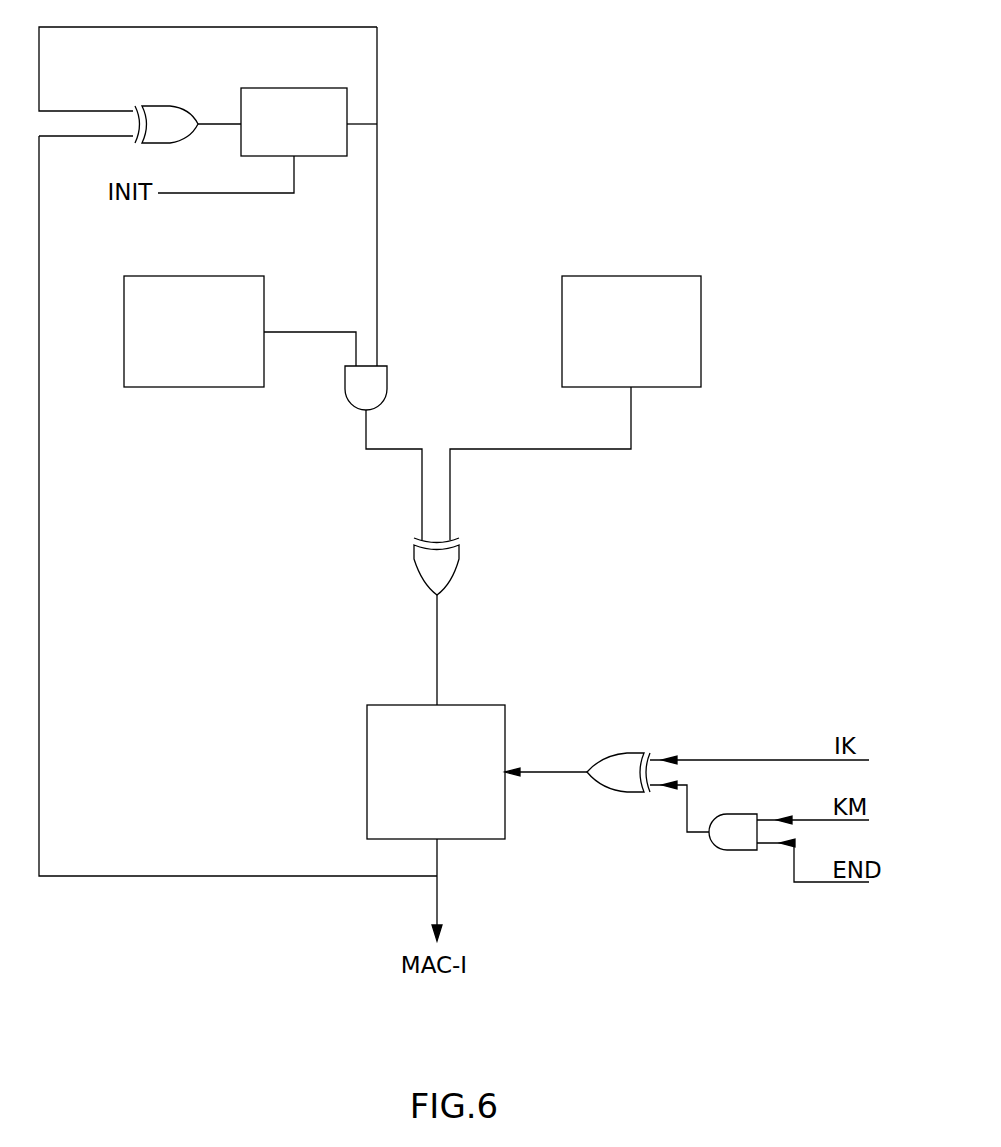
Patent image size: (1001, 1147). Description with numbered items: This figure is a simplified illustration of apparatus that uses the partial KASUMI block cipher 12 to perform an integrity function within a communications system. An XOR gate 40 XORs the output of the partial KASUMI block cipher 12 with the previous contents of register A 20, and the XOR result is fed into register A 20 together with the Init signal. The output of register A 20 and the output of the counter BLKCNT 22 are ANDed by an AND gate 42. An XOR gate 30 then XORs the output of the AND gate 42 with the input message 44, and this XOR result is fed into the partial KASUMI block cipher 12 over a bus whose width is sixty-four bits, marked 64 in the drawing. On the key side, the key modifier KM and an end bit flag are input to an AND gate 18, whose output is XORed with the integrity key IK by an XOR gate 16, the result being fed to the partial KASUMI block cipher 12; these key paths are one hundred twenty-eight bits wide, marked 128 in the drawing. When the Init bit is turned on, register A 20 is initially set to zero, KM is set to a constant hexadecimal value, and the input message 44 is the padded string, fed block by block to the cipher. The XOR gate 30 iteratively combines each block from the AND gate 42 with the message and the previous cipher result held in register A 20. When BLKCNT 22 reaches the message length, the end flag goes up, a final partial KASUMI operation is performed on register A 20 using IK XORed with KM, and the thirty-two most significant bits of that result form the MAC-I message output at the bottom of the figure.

The partial KASUMI block cipher 12 is at (480, 702).
The XOR gate 16 is at (630, 750).
The AND gate 18 is at (742, 848).
The register A 20 is at (318, 153).
The counter BLKCNT 22 is at (195, 385).
The XOR gate 30 is at (450, 562).
The XOR gate 40 is at (160, 107).
The AND gate 42 is at (380, 381).
The input message 44 is at (630, 273).
The 64-bit bus 64 is at (32, 633).
The 128-bit bus 128 is at (542, 778).